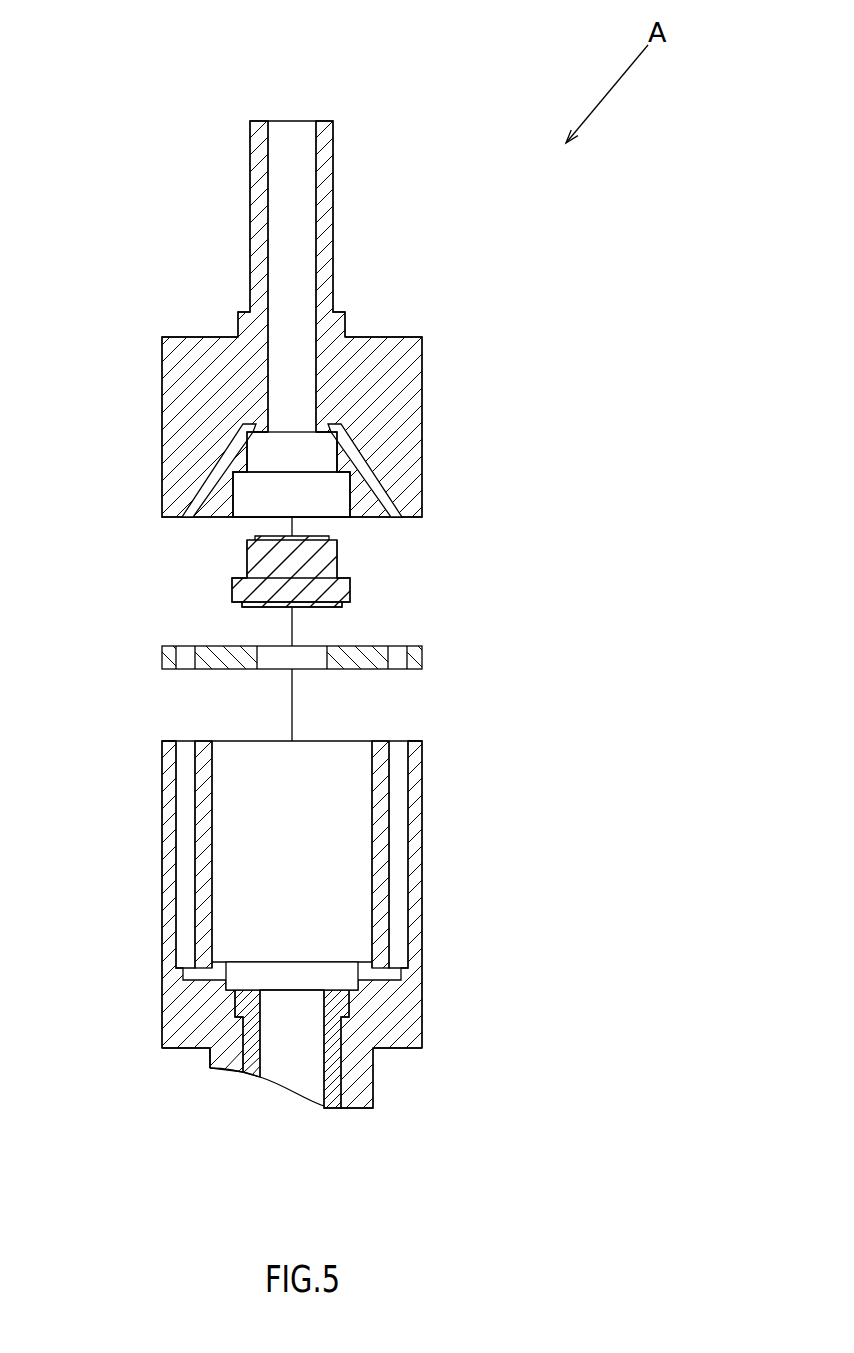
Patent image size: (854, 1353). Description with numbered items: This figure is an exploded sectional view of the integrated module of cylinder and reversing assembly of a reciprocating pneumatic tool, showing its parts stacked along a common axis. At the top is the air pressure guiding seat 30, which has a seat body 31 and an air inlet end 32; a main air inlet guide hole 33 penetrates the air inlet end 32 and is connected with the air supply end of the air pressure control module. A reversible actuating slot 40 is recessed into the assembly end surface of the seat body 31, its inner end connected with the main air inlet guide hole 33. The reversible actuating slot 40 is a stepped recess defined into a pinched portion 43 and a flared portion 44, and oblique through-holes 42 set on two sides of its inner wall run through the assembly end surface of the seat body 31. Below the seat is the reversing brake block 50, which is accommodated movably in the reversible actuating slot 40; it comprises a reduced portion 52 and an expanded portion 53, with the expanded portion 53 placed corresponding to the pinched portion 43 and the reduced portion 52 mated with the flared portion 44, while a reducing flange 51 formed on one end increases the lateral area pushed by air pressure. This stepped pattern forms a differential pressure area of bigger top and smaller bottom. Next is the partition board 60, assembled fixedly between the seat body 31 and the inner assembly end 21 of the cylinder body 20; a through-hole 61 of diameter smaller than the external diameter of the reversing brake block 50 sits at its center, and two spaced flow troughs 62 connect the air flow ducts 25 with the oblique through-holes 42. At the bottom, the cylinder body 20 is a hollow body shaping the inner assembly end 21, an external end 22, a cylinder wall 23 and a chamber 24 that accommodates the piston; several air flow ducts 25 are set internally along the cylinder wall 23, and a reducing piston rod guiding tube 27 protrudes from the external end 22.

The cylinder body 20 is at (455, 938).
The inner assembly end 21 is at (415, 742).
The external end 22 is at (185, 1049).
The cylinder wall 23 is at (418, 853).
The chamber 24 is at (262, 866).
The air flow ducts 25 is at (400, 770).
The reducing piston rod guiding tube 27 is at (375, 1069).
The air pressure guiding seat 30 is at (186, 305).
The seat body 31 is at (422, 393).
The air inlet end 32 is at (250, 205).
The main air inlet guide hole 33 is at (314, 158).
The reversible actuating slot 40 is at (318, 490).
The oblique through-holes 42 is at (233, 443).
The pinched portion 43 is at (254, 462).
The flared portion 44 is at (241, 499).
The reversing brake block 50 is at (218, 573).
The reducing flange 51 is at (243, 606).
The reduced portion 52 is at (337, 555).
The expanded portion 53 is at (350, 592).
The partition board 60 is at (423, 657).
The through-hole 61 is at (305, 660).
The flow troughs 62 is at (403, 648).